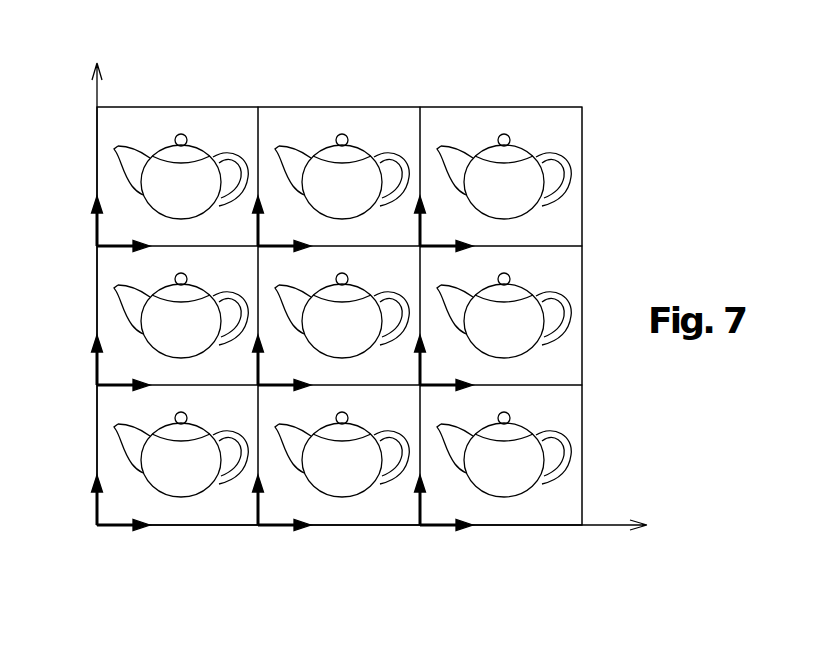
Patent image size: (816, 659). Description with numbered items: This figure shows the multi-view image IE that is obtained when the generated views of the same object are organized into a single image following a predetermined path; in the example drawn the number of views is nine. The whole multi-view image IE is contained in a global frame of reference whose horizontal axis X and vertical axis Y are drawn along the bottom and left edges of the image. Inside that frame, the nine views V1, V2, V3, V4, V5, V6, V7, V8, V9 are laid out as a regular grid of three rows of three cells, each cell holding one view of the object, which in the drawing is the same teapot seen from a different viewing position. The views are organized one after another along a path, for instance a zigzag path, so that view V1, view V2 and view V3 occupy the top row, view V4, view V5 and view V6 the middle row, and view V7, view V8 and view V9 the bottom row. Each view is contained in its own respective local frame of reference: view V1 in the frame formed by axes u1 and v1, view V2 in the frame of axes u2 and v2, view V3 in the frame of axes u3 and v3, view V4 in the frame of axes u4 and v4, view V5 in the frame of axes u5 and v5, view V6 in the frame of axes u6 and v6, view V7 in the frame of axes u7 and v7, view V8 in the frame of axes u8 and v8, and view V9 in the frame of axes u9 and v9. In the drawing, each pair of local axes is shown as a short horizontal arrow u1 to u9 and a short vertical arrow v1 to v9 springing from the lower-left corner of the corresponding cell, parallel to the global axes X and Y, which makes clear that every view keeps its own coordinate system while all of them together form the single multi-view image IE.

The multi-view image IE is at (620, 145).
The view V1 is at (181, 107).
The view V2 is at (343, 107).
The view V3 is at (503, 107).
The view V4 is at (92, 295).
The view V5 is at (400, 270).
The view V6 is at (574, 370).
The view V7 is at (208, 527).
The view V8 is at (369, 528).
The view V9 is at (544, 510).
The frame of reference axis u1 is at (123, 233).
The frame of reference axis u2 is at (284, 233).
The frame of reference axis u3 is at (446, 233).
The frame of reference axis u4 is at (123, 372).
The frame of reference axis u5 is at (284, 372).
The frame of reference axis u6 is at (446, 372).
The frame of reference axis u7 is at (123, 512).
The frame of reference axis u8 is at (284, 512).
The frame of reference axis u9 is at (446, 512).
The frame of reference axis v1 is at (85, 219).
The frame of reference axis v2 is at (246, 219).
The frame of reference axis v3 is at (408, 219).
The frame of reference axis v4 is at (85, 358).
The frame of reference axis v5 is at (246, 358).
The frame of reference axis v6 is at (408, 358).
The frame of reference axis v7 is at (85, 498).
The frame of reference axis v8 is at (246, 498).
The frame of reference axis v9 is at (408, 498).
The frame of reference axis X is at (383, 528).
The frame of reference axis Y is at (95, 277).